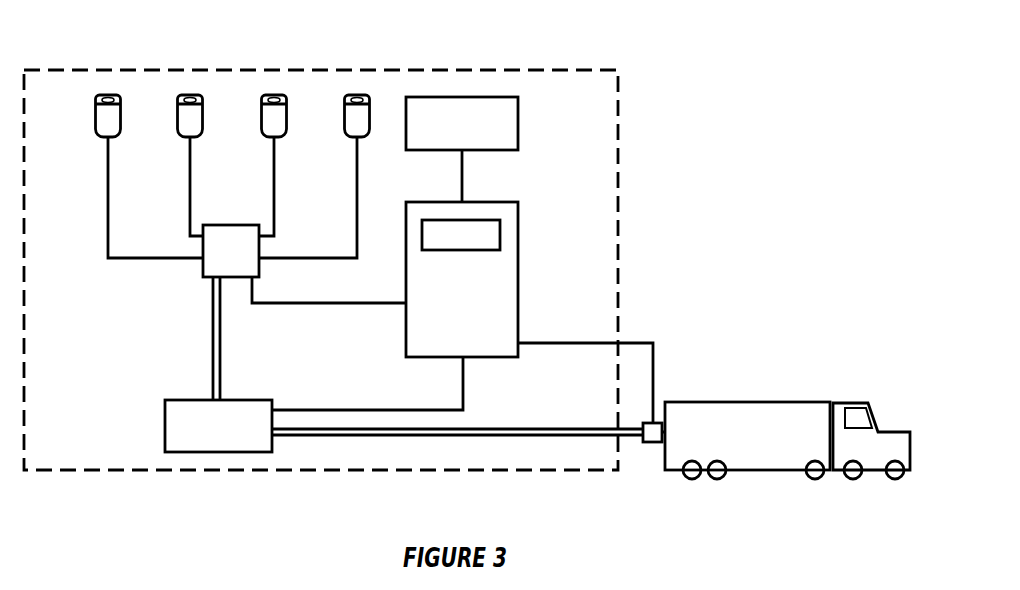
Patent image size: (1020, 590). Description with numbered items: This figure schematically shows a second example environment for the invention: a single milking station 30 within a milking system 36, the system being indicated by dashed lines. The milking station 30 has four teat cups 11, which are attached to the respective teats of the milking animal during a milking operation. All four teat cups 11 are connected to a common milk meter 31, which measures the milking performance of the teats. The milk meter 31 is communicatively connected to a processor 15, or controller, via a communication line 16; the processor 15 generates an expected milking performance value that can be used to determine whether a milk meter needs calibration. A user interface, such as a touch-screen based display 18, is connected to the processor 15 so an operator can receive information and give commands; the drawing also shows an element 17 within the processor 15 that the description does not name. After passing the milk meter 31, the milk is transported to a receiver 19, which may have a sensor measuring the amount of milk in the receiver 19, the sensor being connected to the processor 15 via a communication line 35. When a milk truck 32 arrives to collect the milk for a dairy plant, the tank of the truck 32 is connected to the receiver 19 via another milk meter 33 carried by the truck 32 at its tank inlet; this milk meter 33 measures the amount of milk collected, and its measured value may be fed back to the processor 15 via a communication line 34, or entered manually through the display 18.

The teat cups 11 is at (96, 126).
The processor 15 is at (502, 306).
The communication line 16 is at (345, 303).
The display/processor 17 is at (498, 234).
The touch-screen based display 18 is at (498, 124).
The receiver 19 is at (190, 421).
The milking station 30 is at (298, 83).
The milk meter 31 is at (218, 258).
The milk truck 32 is at (755, 418).
The milk meter 33 is at (649, 443).
The communication line 34 is at (654, 340).
The communication line 35 is at (356, 410).
The milking system 36 is at (618, 180).